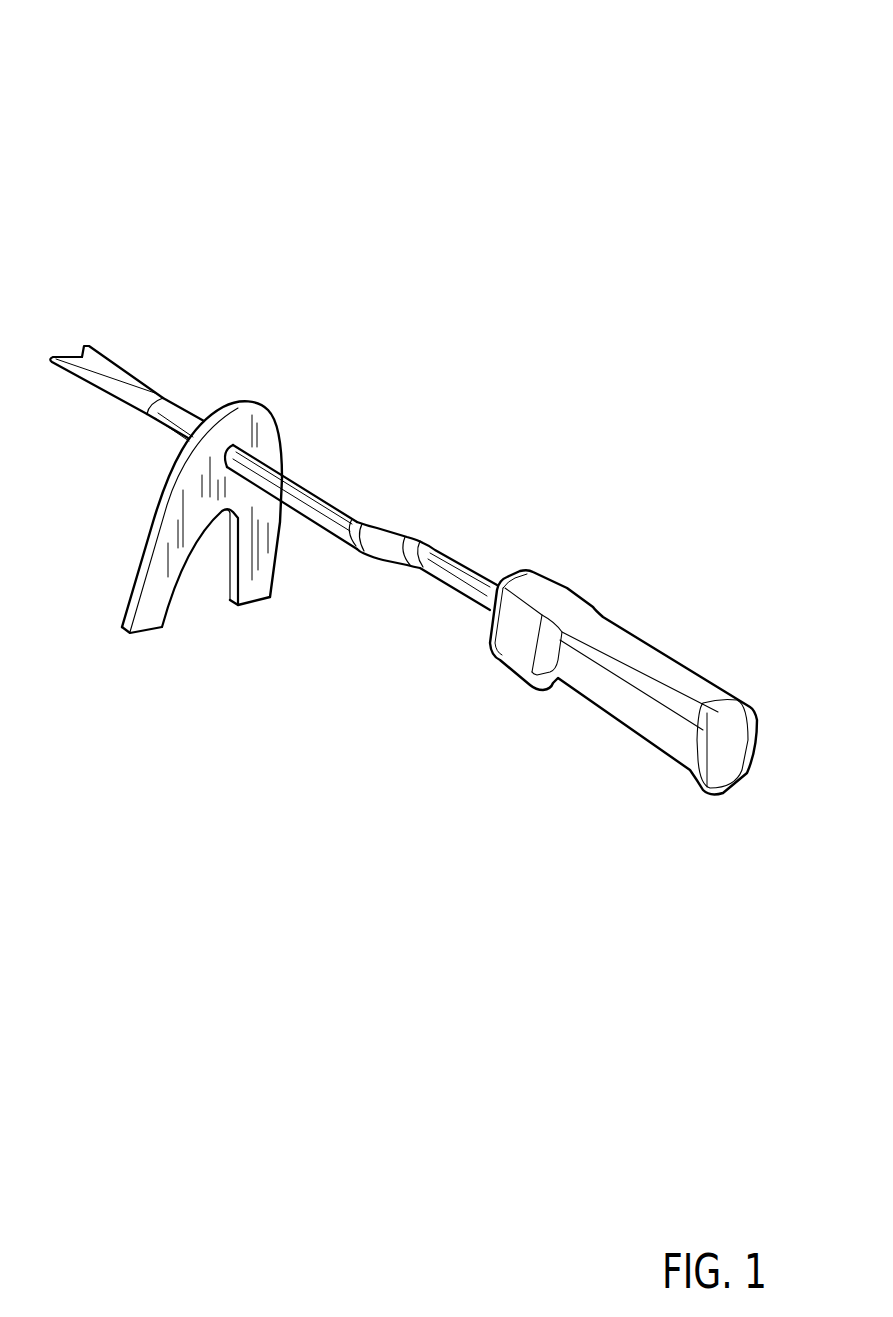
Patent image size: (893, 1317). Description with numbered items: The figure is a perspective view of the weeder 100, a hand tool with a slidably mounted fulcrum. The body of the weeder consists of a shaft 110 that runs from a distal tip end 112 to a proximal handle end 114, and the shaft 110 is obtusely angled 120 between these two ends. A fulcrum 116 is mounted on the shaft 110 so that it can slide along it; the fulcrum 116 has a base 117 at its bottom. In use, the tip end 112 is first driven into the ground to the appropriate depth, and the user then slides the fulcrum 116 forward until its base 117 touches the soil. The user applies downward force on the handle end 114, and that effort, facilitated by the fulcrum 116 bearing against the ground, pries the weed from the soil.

The weeder 100 is at (792, 52).
The shaft 110 is at (292, 493).
The tip end 112 is at (93, 362).
The handle end 114 is at (647, 672).
The fulcrum 116 is at (192, 465).
The base 117 is at (225, 607).
The obtuse angle 120 is at (398, 540).